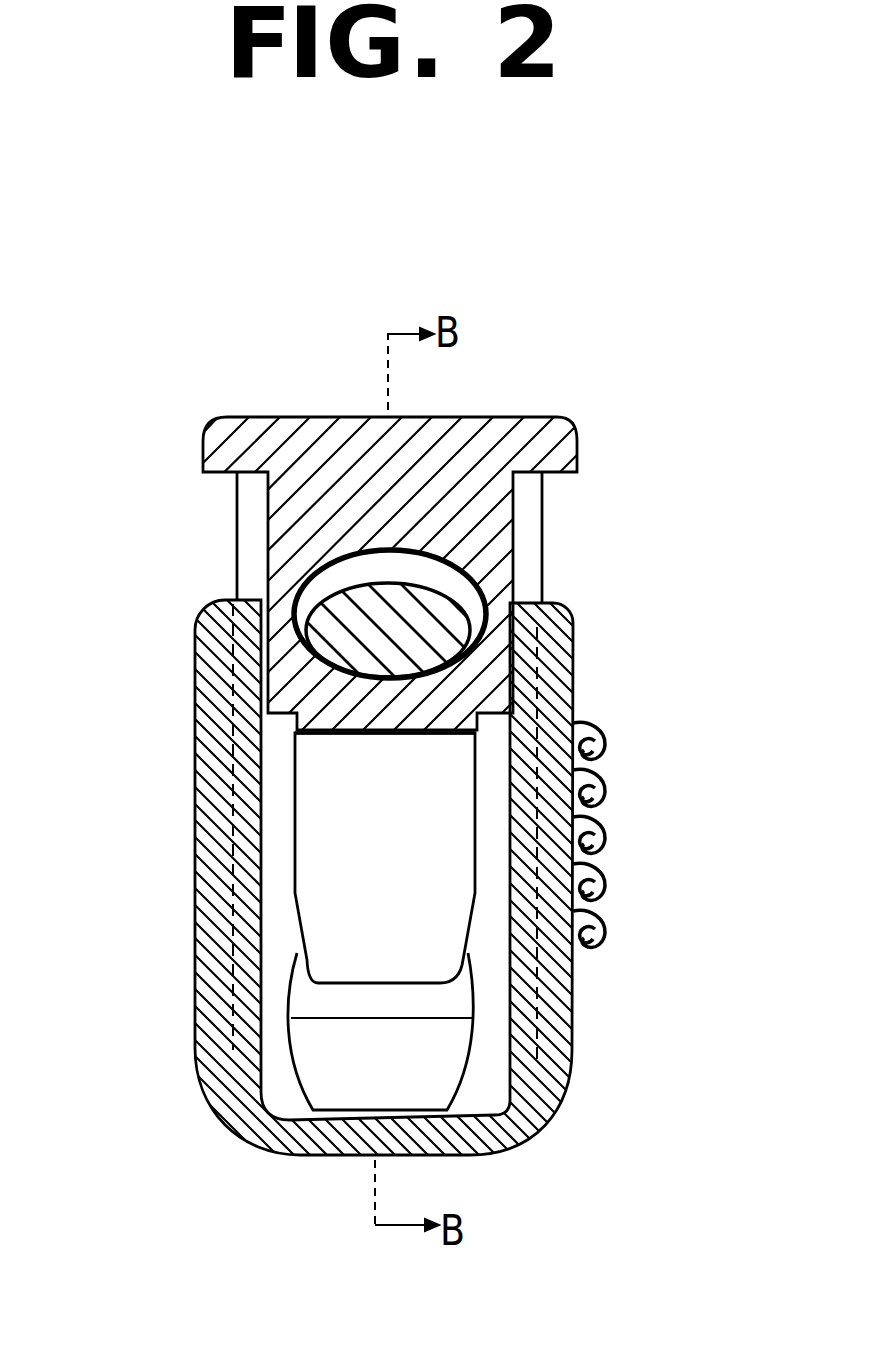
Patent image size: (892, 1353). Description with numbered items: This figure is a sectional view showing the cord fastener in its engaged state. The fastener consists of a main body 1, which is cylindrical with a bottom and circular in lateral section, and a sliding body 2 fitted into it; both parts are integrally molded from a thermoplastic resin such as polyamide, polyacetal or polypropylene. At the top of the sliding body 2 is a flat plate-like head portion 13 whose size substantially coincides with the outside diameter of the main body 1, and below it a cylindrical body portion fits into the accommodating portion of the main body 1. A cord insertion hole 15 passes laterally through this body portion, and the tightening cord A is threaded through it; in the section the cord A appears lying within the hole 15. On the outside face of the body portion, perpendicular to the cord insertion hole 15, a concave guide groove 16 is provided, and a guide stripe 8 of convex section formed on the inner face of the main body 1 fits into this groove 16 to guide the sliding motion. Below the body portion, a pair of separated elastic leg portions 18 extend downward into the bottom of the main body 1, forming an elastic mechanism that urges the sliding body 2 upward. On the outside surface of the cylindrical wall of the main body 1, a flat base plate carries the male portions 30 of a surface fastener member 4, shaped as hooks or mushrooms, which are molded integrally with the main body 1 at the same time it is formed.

The main body 1 is at (413, 878).
The sliding body 2 is at (364, 475).
The surface fastener member 4 is at (673, 842).
The guide stripe 8 is at (252, 673).
The head portion 13 is at (573, 430).
The cord insertion hole 15 is at (335, 578).
The guide groove 16 is at (252, 510).
The elastic leg portions 18 is at (375, 825).
The male portions 30 is at (605, 900).
The tightening cord A is at (386, 612).